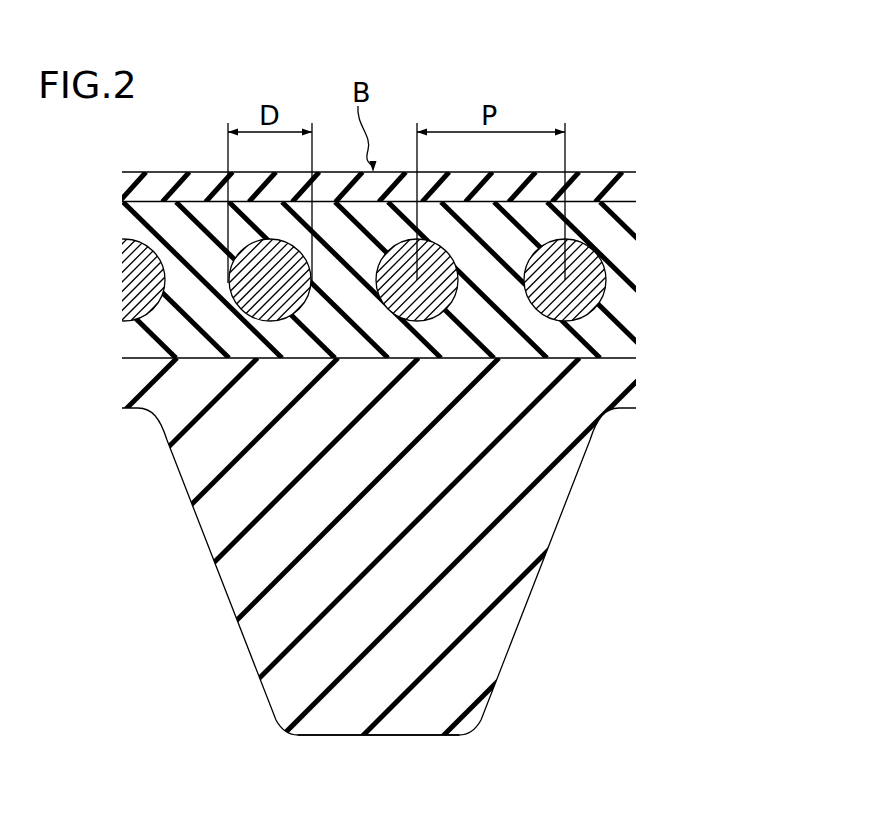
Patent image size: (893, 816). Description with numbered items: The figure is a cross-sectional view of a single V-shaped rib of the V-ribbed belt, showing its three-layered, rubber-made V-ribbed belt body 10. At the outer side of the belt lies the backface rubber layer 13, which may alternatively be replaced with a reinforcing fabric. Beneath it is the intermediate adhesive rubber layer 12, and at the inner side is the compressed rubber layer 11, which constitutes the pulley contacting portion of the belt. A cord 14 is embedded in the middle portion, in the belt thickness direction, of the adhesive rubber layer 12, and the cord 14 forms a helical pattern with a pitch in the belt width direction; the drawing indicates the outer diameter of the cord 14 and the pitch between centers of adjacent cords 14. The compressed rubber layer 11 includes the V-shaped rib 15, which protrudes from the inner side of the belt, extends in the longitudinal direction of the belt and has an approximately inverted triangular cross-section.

The V-ribbed belt body 10 is at (410, 462).
The compressed rubber layer 11 is at (565, 473).
The adhesive rubber layer 12 is at (622, 255).
The backface rubber layer 13 is at (622, 185).
The cord 14 is at (567, 272).
The V-shaped rib 15 is at (385, 665).